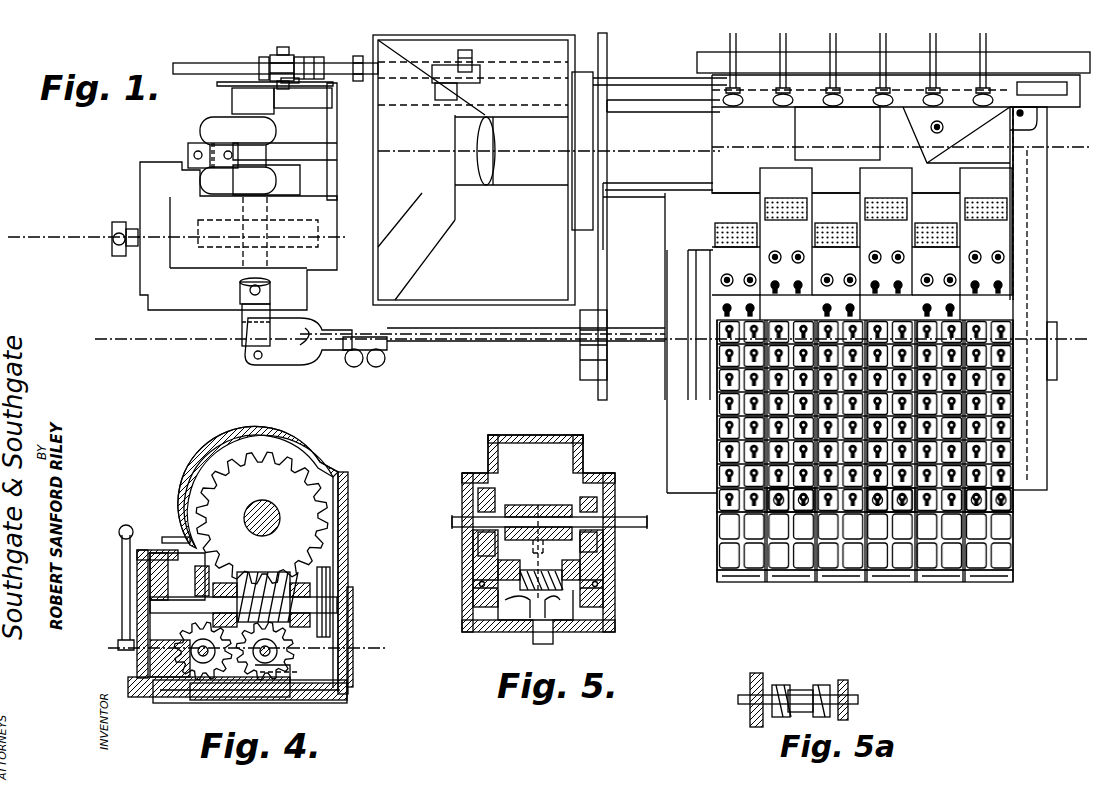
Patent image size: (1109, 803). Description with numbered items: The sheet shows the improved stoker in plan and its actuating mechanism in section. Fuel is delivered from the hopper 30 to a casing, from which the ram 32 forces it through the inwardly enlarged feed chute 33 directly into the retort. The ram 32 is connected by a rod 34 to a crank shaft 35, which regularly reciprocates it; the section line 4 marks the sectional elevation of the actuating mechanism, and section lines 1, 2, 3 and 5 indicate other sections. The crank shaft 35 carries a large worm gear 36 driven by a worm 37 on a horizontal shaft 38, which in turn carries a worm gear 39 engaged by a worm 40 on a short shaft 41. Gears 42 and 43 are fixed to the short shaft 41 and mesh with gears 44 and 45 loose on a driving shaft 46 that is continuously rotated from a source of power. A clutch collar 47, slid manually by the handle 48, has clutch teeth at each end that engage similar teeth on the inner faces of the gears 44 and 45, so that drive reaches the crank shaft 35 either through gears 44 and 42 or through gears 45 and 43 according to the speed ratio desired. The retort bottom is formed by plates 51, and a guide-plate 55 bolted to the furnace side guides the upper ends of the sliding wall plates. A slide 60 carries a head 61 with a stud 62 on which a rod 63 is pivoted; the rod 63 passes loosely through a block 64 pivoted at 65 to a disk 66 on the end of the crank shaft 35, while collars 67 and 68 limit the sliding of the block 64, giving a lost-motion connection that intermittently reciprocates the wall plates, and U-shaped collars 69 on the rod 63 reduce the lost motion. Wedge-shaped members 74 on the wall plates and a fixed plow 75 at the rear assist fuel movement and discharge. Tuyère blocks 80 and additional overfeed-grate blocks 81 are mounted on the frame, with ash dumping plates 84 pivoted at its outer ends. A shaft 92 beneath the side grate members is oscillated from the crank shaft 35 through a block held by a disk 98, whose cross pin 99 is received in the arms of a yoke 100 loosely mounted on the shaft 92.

In FIG. 1, the section line 1- 1 is at (48, 236).
In FIG. 1, the section line 2- 2 is at (1092, 129).
In FIG. 1, the section line 3- 3 is at (1092, 320).
In FIG. 1, the section line 4- 4 is at (361, 221).
In FIG. 4, the section line 5- 5 is at (248, 645).
In FIG. 1, the hopper 30 is at (432, 303).
In FIG. 1, the ram 32 is at (494, 137).
In FIG. 1, the feed chute 33 is at (641, 190).
In FIG. 1, the rod 34 is at (282, 150).
In FIG. 1, the crank shaft 35 is at (290, 255).
In FIG. 4, the crank shaft 35 is at (263, 505).
In FIG. 1, the worm gear 36 is at (200, 250).
In FIG. 4, the worm gear 36 is at (303, 472).
In FIG. 4, the worm 37 is at (263, 573).
In FIG. 4, the horizontal shaft 38 is at (172, 607).
In FIG. 4, the worm gear 39 is at (200, 563).
In FIG. 5, the worm 40 is at (530, 595).
In FIG. 4, the short shaft 41 is at (187, 667).
In FIG. 5, the short shaft 41 is at (603, 580).
In FIG. 5, the gear 42 is at (607, 613).
In FIG. 4, the gear 43 is at (193, 683).
In FIG. 5, the gear 43 is at (477, 600).
In FIG. 5, the gear 44 is at (592, 497).
In FIG. 5A, the gear 44 is at (845, 680).
In FIG. 4, the gear 45 is at (290, 653).
In FIG. 5, the gear 45 is at (488, 492).
In FIG. 5A, the gear 45 is at (757, 673).
In FIG. 4, the driving shaft 46 is at (295, 680).
In FIG. 5, the driving shaft 46 is at (628, 517).
In FIG. 5A, the driving shaft 46 is at (744, 705).
In FIG. 5, the clutch collar 47 is at (520, 503).
In FIG. 5A, the clutch collar 47 is at (778, 685).
In FIG. 4, the handle 48 is at (125, 526).
In FIG. 5, the handle 48 is at (553, 640).
In FIG. 1, the plate 51 is at (884, 298).
In FIG. 1, the guide-plate 55 is at (1078, 96).
In FIG. 1, the slide 60 is at (627, 83).
In FIG. 1, the head 61 is at (470, 86).
In FIG. 1, the stud 62 is at (462, 50).
In FIG. 1, the rod 63 is at (201, 67).
In FIG. 1, the block 64 is at (290, 58).
In FIG. 1, the pivot 65 is at (283, 47).
In FIG. 1, the disk 66 is at (222, 86).
In FIG. 1, the collar 67 is at (262, 60).
In FIG. 1, the collar 68 is at (358, 56).
In FIG. 1, the U-shaped collar 69 is at (318, 58).
In FIG. 1, the wedge-shaped member 74 is at (806, 137).
In FIG. 1, the plow 75 is at (985, 112).
In FIG. 1, the tuyère block 80 is at (985, 200).
In FIG. 1, the block 81 is at (1000, 425).
In FIG. 1, the ash dumping plate 84 is at (1000, 527).
In FIG. 1, the shaft 92 is at (452, 343).
In FIG. 1, the disk 98 is at (240, 294).
In FIG. 1, the cross pin 99 is at (256, 325).
In FIG. 1, the yoke 100 is at (316, 342).